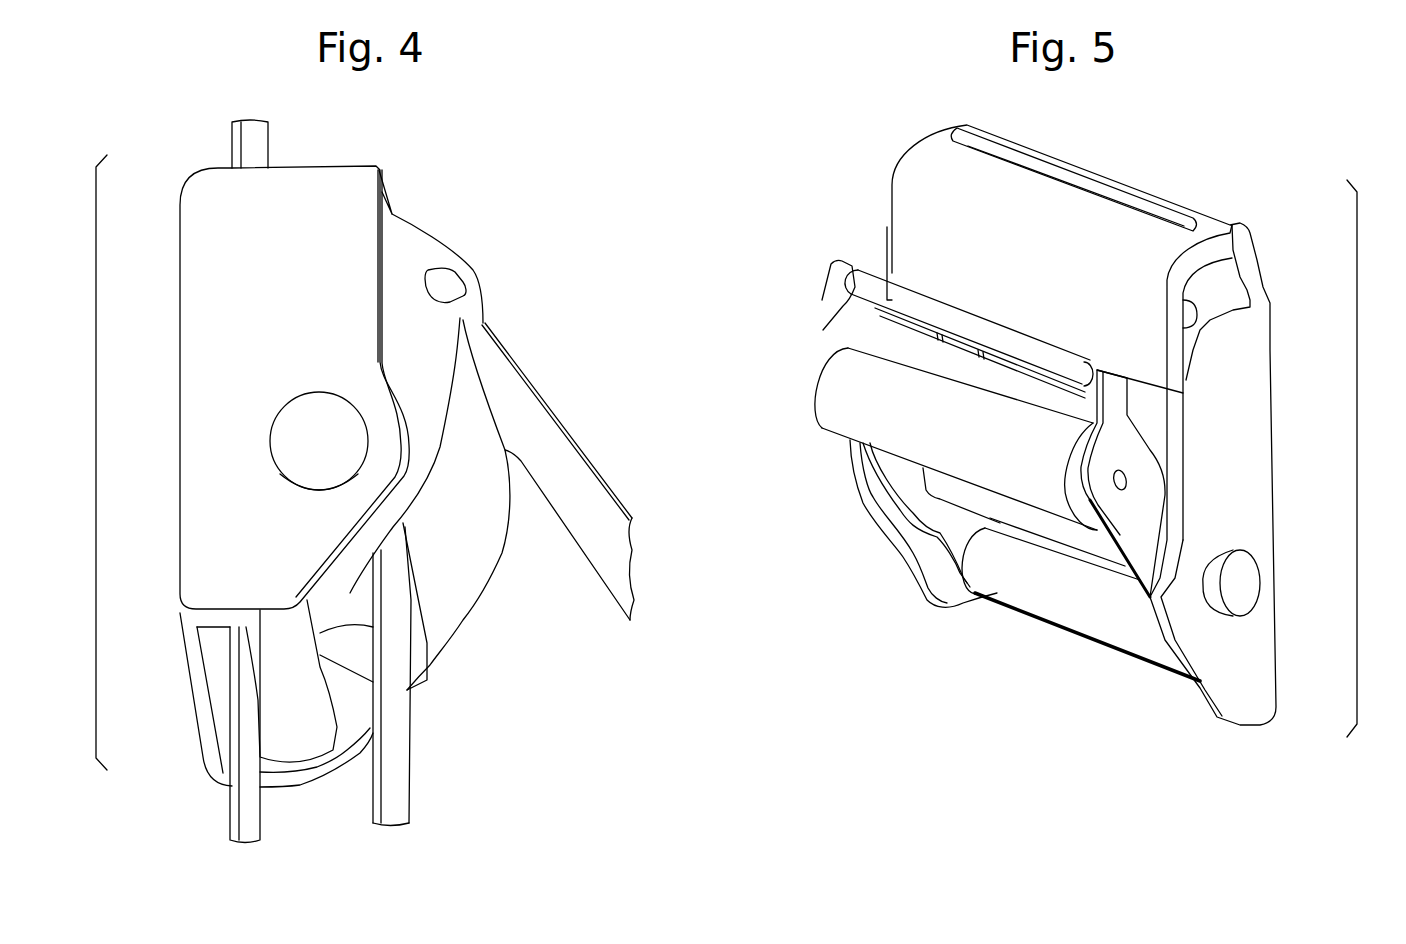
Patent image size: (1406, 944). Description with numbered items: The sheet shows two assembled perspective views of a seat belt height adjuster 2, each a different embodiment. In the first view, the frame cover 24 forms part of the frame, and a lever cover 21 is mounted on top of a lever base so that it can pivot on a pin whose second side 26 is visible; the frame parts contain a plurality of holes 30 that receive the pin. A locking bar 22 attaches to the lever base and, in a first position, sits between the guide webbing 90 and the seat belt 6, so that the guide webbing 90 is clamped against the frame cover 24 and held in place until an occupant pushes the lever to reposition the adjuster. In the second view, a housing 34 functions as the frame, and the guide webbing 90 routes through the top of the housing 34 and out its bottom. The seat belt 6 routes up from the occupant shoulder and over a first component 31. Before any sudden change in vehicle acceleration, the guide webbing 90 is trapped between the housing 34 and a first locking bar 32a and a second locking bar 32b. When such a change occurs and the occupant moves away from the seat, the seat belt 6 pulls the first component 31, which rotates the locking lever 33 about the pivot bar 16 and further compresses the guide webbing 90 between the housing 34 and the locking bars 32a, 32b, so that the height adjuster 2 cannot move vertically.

In FIG. 4, the height adjuster 2 is at (96, 463).
In FIG. 5, the height adjuster 2 is at (1357, 463).
In FIG. 4, the seat belt 6 is at (593, 463).
In FIG. 5, the pivot bar 16 is at (1249, 583).
In FIG. 4, the lever cover 21 is at (480, 297).
In FIG. 4, the locking bar 22 is at (305, 743).
In FIG. 4, the frame cover 24 is at (180, 277).
In FIG. 4, the second side 26 is at (270, 441).
In FIG. 5, the holes 30 is at (943, 313).
In FIG. 5, the first component 31 is at (818, 363).
In FIG. 5, the first locking bar 32a is at (1077, 607).
In FIG. 5, the second locking bar 32b is at (1167, 293).
In FIG. 5, the locking lever 33 is at (903, 483).
In FIG. 5, the housing 34 is at (1250, 377).
In FIG. 4, the guide webbing 90 is at (230, 143).